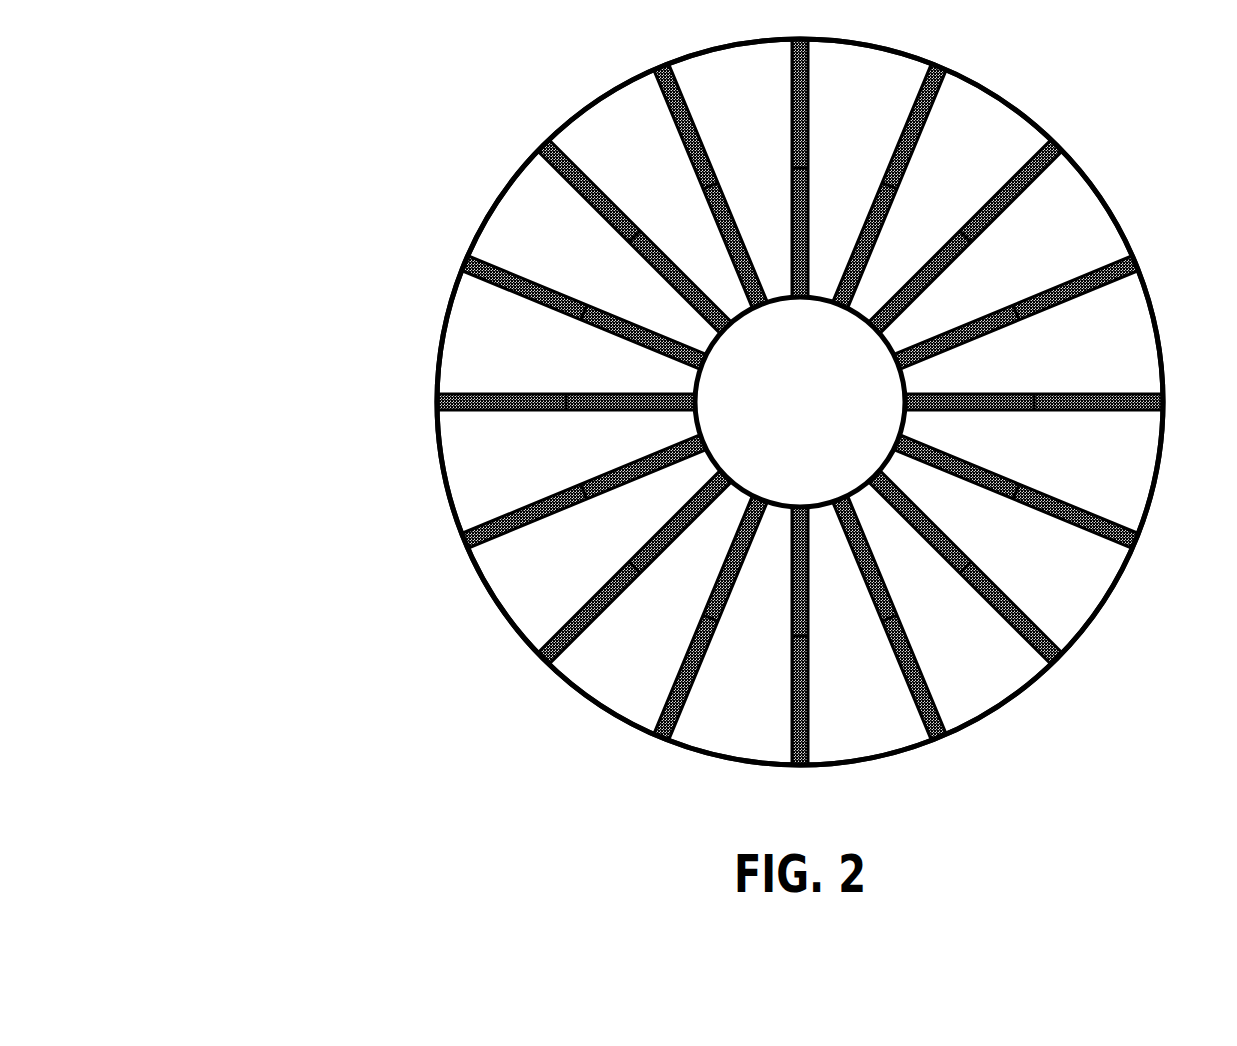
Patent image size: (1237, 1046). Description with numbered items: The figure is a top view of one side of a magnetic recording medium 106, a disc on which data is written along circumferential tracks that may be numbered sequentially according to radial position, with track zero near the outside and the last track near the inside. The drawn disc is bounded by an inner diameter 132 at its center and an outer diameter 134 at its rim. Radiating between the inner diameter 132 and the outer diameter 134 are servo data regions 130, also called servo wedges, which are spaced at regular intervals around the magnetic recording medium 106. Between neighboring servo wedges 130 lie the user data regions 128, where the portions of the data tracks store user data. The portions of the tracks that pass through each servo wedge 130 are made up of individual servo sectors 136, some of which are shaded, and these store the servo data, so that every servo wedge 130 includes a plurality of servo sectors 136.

The magnetic recording medium 106 is at (319, 163).
The user data regions 128 is at (872, 704).
The servo data regions 130 is at (1140, 379).
The inner diameter 132 is at (800, 326).
The outer diameter 134 is at (517, 145).
The servo sectors 136 is at (774, 642).